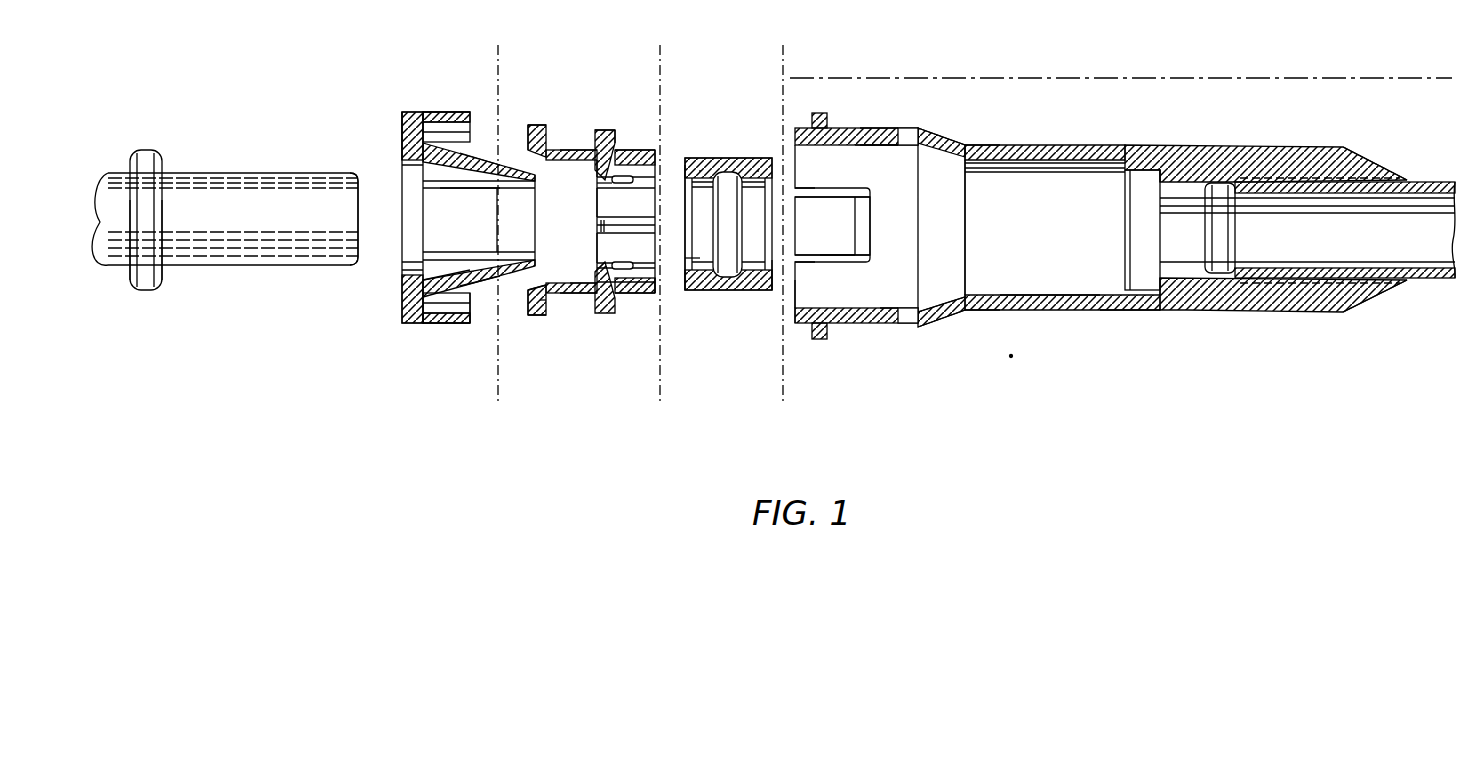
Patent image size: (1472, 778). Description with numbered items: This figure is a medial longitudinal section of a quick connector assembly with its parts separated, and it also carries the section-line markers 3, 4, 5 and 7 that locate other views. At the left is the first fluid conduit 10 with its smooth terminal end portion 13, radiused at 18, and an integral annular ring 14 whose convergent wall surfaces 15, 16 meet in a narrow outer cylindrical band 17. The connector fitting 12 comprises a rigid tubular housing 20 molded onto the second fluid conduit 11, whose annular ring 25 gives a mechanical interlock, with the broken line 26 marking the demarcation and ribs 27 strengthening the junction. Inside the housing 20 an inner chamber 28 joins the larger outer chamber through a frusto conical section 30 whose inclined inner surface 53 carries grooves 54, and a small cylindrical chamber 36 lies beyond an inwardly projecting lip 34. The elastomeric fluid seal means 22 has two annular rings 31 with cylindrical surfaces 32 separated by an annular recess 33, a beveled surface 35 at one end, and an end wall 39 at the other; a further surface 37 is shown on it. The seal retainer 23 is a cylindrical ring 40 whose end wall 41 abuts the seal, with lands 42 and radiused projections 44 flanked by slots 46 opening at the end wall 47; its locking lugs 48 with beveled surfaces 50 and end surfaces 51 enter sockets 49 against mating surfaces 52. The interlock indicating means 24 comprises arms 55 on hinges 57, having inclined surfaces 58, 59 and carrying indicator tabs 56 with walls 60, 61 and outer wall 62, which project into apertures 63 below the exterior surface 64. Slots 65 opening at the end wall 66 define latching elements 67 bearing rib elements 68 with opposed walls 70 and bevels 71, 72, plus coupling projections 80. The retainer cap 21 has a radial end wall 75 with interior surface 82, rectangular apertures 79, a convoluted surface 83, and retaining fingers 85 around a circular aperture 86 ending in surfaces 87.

The first fluid conduit 10 is at (107, 170).
The second fluid conduit 11 is at (1421, 282).
The connector fitting 12 is at (1140, 324).
The terminal end portion 13 is at (272, 195).
The annular ring 14 is at (166, 160).
The convergent wall surface 15 is at (160, 280).
The convergent wall surface 16 is at (128, 278).
The outer cylindrical band 17 is at (145, 282).
The radiused end 18 is at (360, 180).
The tubular housing 20 is at (1151, 140).
The retainer cap 21 is at (430, 110).
The fluid seal means 22 is at (760, 156).
The seal retainer 23 is at (644, 148).
The interlock indicating means 24 is at (553, 126).
The annular ring 25 is at (1233, 278).
The demarcation line 26 is at (1323, 177).
The longitudinally extending rib 27 is at (1334, 300).
The inner chamber 28 is at (1033, 298).
The frusto conical section 30 is at (931, 320).
The inwardly projecting annular ring 31 is at (758, 167).
The cylindrical surface 32 is at (690, 270).
The annular recess 33 is at (728, 278).
The inwardly projecting lip 34 is at (1110, 294).
The beveled surface 35 is at (686, 172).
The small cylindrical chamber 36 is at (694, 264).
The ring outer face 37 is at (780, 280).
The end wall 39 is at (1152, 292).
The cylindrical ring 40 is at (623, 294).
The end wall 41 is at (642, 294).
The axially extending land 42 is at (595, 233).
The projection 44 is at (603, 270).
The axially extending slot 46 is at (612, 180).
The end wall 47 is at (598, 203).
The locking lug 48 is at (594, 294).
The socket 49 is at (987, 148).
The beveled surface 50 is at (611, 135).
The end surface 51 is at (594, 150).
The mating surface 52 is at (968, 145).
The inner surface 53 is at (948, 254).
The axially extending groove 54 is at (960, 300).
The axially extending arm 55 is at (584, 150).
The indicator tab 56 is at (537, 123).
The integral hinge 57 is at (597, 163).
The inwardly inclined surface 58 is at (583, 296).
The outwardly inclined surface portion 59 is at (527, 148).
The radially extending wall 60 is at (530, 318).
The radially extending wall 61 is at (523, 313).
The outer wall 62 is at (538, 322).
The aperture 63 is at (912, 134).
The exterior surface 64 is at (876, 140).
The axially extending slot 65 is at (810, 192).
The end wall 66 is at (790, 330).
The latching element 67 is at (862, 143).
The rib element 68 is at (891, 148).
The opposed wall 70 is at (876, 155).
The beveled surface 71 is at (866, 148).
The beveled surface 72 is at (864, 231).
The radial end wall 75 is at (404, 128).
The rectangular aperture 79 is at (444, 116).
The coupling projection 80 is at (822, 130).
The interiorly facing surface 82 is at (473, 185).
The convoluted surface 83 is at (466, 312).
The resilient retaining finger 85 is at (481, 160).
The circular aperture 86 is at (422, 272).
The axially extending surface 87 is at (497, 252).
The section line 3 is at (785, 52).
The section line 4 is at (793, 72).
The section line 5 is at (662, 52).
The section line 7 is at (500, 52).